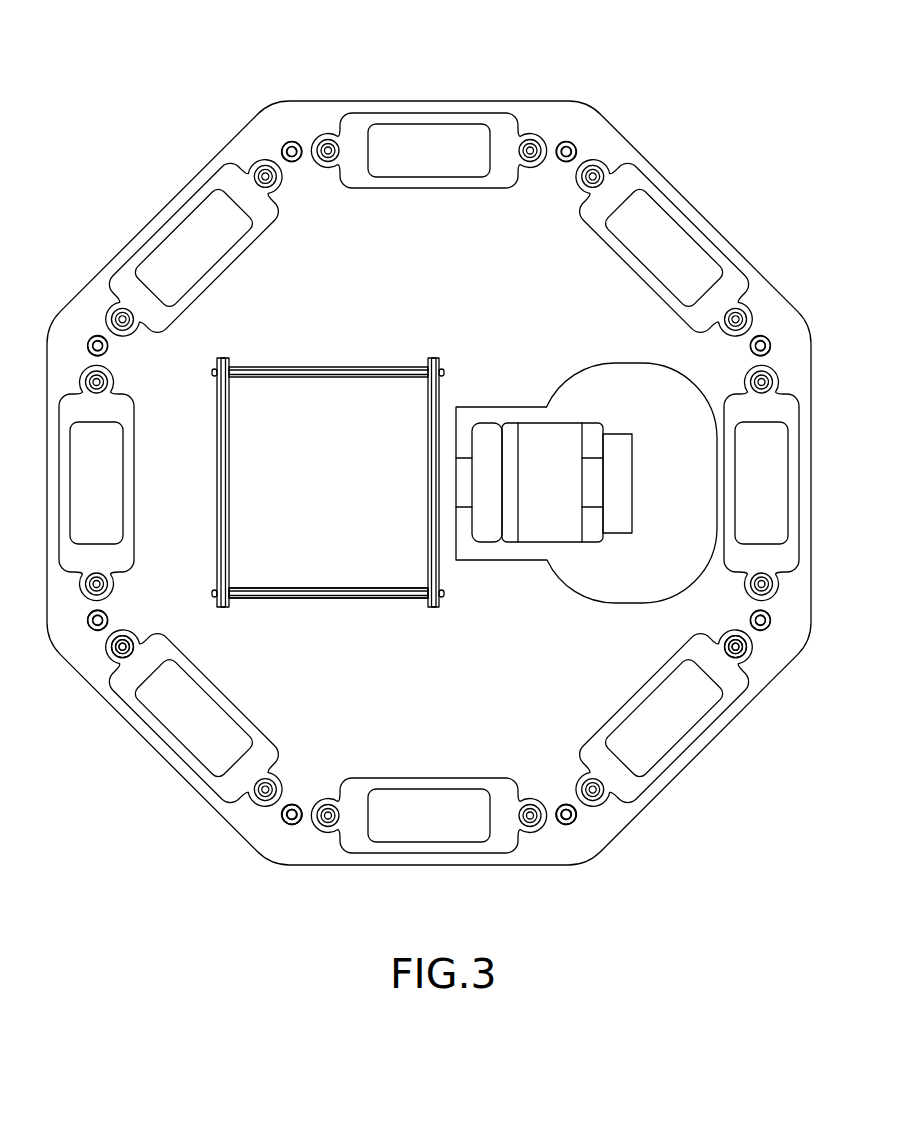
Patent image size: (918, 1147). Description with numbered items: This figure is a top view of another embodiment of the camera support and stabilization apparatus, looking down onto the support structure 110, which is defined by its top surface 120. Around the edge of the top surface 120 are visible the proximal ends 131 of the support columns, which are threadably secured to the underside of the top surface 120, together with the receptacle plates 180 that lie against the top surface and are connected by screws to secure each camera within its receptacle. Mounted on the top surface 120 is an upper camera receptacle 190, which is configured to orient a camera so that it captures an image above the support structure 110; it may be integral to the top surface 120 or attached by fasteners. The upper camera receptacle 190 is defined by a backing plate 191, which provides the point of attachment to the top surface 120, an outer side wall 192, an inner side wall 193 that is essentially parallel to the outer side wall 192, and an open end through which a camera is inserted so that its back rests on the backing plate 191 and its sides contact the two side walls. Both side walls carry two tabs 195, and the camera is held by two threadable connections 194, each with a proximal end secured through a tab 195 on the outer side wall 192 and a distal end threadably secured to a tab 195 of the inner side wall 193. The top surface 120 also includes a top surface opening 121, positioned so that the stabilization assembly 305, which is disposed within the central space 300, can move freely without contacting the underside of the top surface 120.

The support structure 110 is at (162, 107).
The top surface 120 is at (618, 157).
The top surface opening 121 is at (603, 367).
The proximal end 131 is at (288, 818).
The receptacle plates 180 is at (119, 653).
The upper camera receptacle 190 is at (334, 480).
The backing plate 191 is at (343, 575).
The outer side wall 192 is at (441, 577).
The inner side wall 193 is at (216, 526).
The threadable connections 194 is at (336, 365).
The tabs 195 is at (214, 358).
The central space 300 is at (589, 570).
The stabilization assembly 305 is at (568, 535).